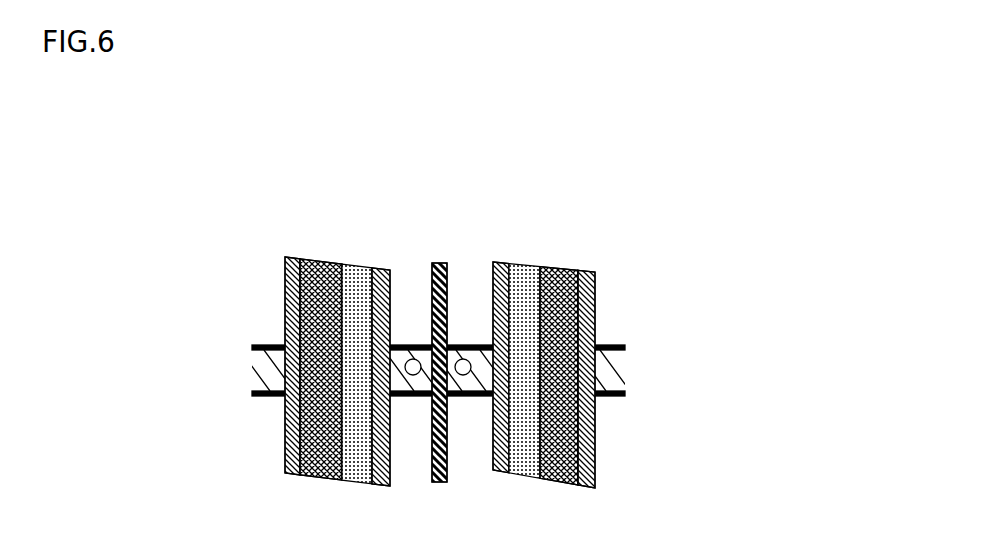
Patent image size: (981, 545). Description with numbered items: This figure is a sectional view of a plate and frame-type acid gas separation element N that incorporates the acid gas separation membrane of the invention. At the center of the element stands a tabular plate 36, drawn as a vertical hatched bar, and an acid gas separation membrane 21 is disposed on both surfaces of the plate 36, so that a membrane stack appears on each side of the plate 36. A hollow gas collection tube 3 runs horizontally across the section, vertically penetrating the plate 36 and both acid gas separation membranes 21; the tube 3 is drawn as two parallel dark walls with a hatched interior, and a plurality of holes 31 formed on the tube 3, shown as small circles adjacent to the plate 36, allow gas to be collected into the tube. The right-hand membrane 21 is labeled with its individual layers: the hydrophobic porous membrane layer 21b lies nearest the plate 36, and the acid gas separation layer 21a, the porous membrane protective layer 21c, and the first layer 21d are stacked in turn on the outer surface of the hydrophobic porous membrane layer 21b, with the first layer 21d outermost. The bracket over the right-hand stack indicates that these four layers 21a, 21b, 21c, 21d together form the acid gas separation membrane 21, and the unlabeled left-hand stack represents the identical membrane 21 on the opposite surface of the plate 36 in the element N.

The plate and frame-type acid gas separation element N is at (282, 162).
The hollow gas collection tube 3 is at (263, 393).
The acid gas separation membrane 21 is at (568, 288).
The acid gas separation layer 21a is at (520, 251).
The hydrophobic porous membrane layer 21b is at (488, 251).
The porous membrane protective layer 21c is at (559, 257).
The first layer 21d is at (594, 262).
The tabular plate 36 is at (433, 258).
The holes 31 is at (416, 377).